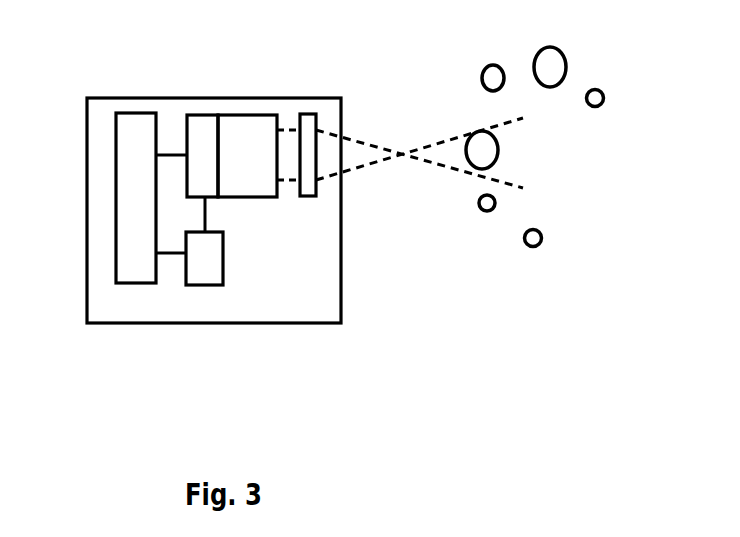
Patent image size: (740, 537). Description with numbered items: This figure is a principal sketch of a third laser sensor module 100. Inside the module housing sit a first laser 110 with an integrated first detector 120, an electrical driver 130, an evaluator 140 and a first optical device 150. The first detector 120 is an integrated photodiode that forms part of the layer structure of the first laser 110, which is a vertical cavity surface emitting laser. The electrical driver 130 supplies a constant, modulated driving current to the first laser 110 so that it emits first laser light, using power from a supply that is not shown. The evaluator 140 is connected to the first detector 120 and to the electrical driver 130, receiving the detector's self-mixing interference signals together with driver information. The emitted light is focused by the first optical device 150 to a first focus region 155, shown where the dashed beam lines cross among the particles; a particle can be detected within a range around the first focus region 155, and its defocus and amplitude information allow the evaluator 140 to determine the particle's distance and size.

The third laser sensor module 100 is at (117, 98).
The first laser 110 is at (240, 115).
The first detector 120 is at (204, 115).
The electrical driver 130 is at (116, 207).
The evaluator 140 is at (205, 285).
The first optical device 150 is at (313, 114).
The first focus region 155 is at (403, 150).